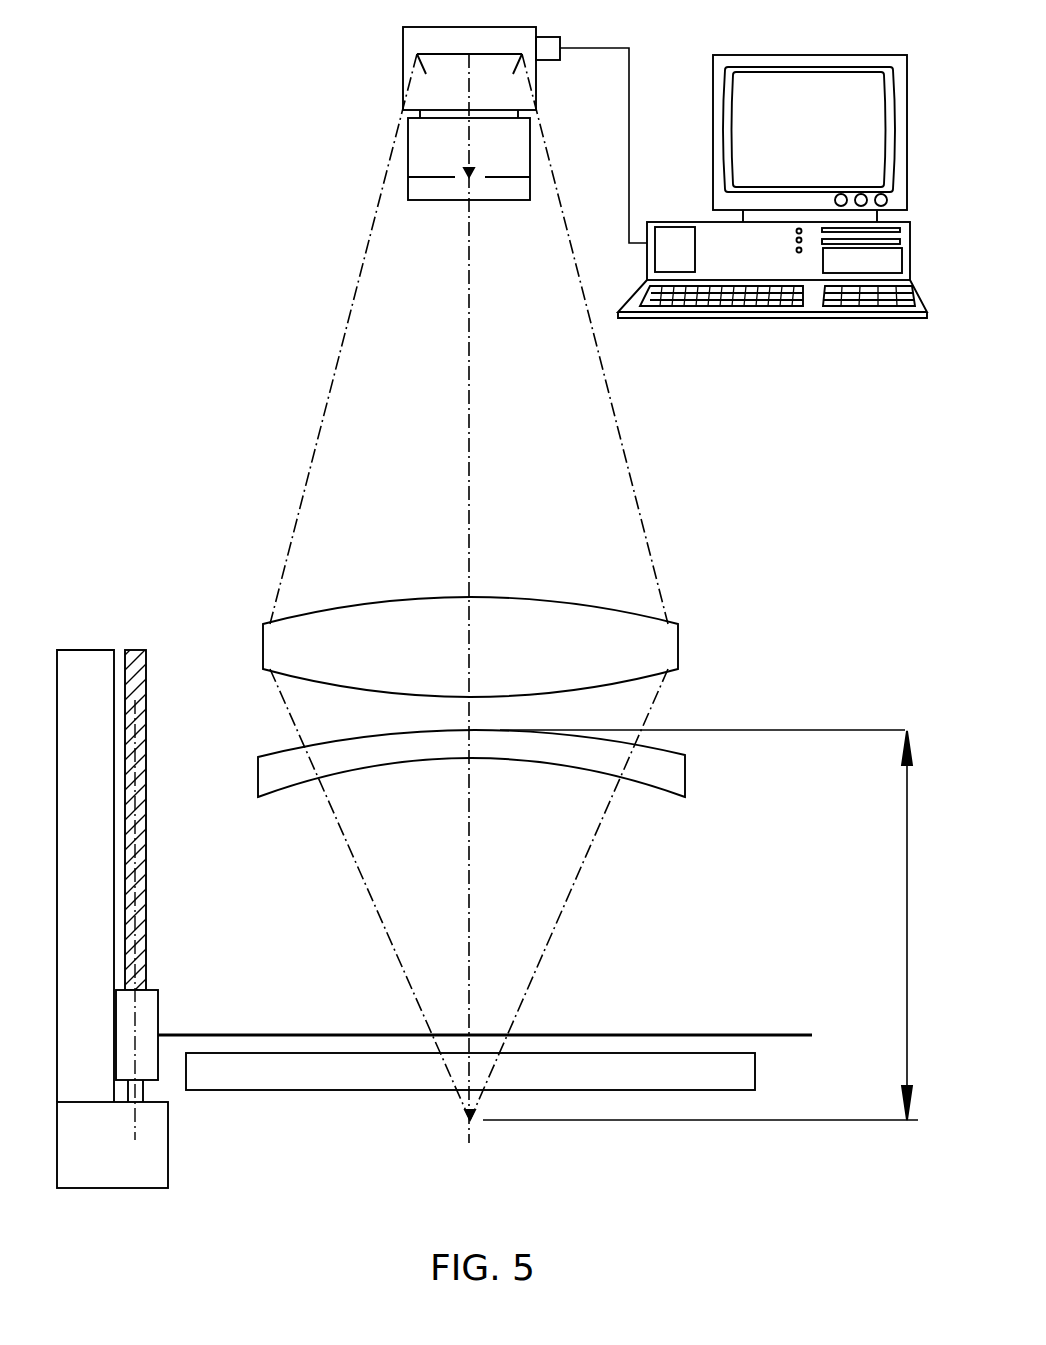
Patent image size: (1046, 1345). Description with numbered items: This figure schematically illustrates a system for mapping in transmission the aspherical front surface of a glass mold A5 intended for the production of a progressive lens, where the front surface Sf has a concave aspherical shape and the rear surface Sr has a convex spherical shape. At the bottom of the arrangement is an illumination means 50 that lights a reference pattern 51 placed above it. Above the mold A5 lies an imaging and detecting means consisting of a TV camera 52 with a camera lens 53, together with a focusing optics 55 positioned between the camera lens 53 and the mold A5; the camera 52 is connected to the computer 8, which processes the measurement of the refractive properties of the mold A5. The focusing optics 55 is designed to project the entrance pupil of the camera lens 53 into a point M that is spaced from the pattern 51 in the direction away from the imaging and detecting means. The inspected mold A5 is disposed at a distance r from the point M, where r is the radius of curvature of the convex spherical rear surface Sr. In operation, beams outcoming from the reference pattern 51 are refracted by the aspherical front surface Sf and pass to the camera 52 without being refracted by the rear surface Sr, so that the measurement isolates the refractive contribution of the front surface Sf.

The TV camera 52 is at (408, 82).
The camera lens 53 is at (417, 143).
The computer 8 is at (748, 262).
The focusing optics 55 is at (323, 632).
The glass mold A5 is at (678, 768).
The rear surface Sr is at (675, 754).
The front surface Sf is at (640, 783).
The reference pattern 51 is at (747, 1035).
The illumination means 50 is at (718, 1072).
The point M is at (502, 1137).
The distance r is at (703, 925).